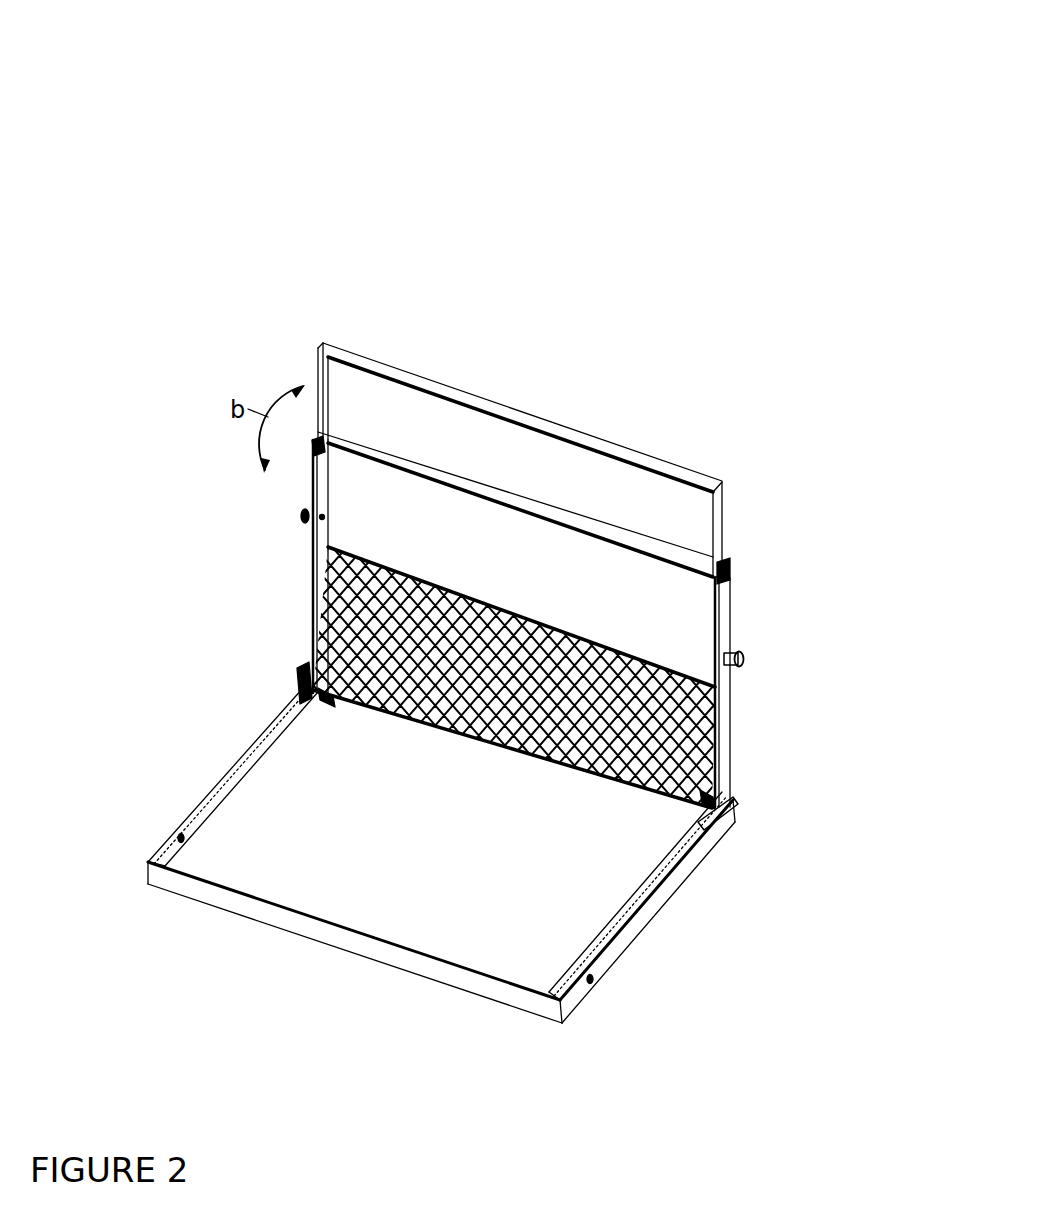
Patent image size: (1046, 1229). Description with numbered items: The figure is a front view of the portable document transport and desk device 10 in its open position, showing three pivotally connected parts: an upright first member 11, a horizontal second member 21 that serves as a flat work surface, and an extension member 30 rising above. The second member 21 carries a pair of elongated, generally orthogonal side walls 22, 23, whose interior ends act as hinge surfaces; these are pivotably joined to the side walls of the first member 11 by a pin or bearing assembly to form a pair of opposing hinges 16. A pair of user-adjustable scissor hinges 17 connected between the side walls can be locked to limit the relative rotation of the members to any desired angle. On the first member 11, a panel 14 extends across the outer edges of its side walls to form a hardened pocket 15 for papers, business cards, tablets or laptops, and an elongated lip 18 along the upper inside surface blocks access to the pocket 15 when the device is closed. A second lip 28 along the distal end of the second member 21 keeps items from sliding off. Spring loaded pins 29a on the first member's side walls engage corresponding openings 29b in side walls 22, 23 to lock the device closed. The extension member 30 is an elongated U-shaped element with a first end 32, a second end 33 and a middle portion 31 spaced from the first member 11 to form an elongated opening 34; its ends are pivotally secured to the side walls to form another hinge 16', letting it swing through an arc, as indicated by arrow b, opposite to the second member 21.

The portable document transport and desk device 10 is at (178, 186).
The first member 11 is at (458, 550).
The panel 14 is at (523, 695).
The pocket 15 is at (545, 600).
The hinges 16 is at (513, 749).
The hinge 16' is at (514, 510).
The scissor hinges 17 is at (567, 748).
The elongated lip 18 is at (532, 504).
The second member 21 is at (446, 871).
The side wall 22 is at (215, 777).
The side wall 23 is at (655, 896).
The second lip 28 is at (355, 953).
The spring loaded pins 29a is at (520, 588).
The openings 29b is at (385, 912).
The extension member 30 is at (416, 359).
The middle portion 31 is at (520, 424).
The first end 32 is at (260, 372).
The second end 33 is at (773, 519).
The elongated opening 34 is at (526, 468).